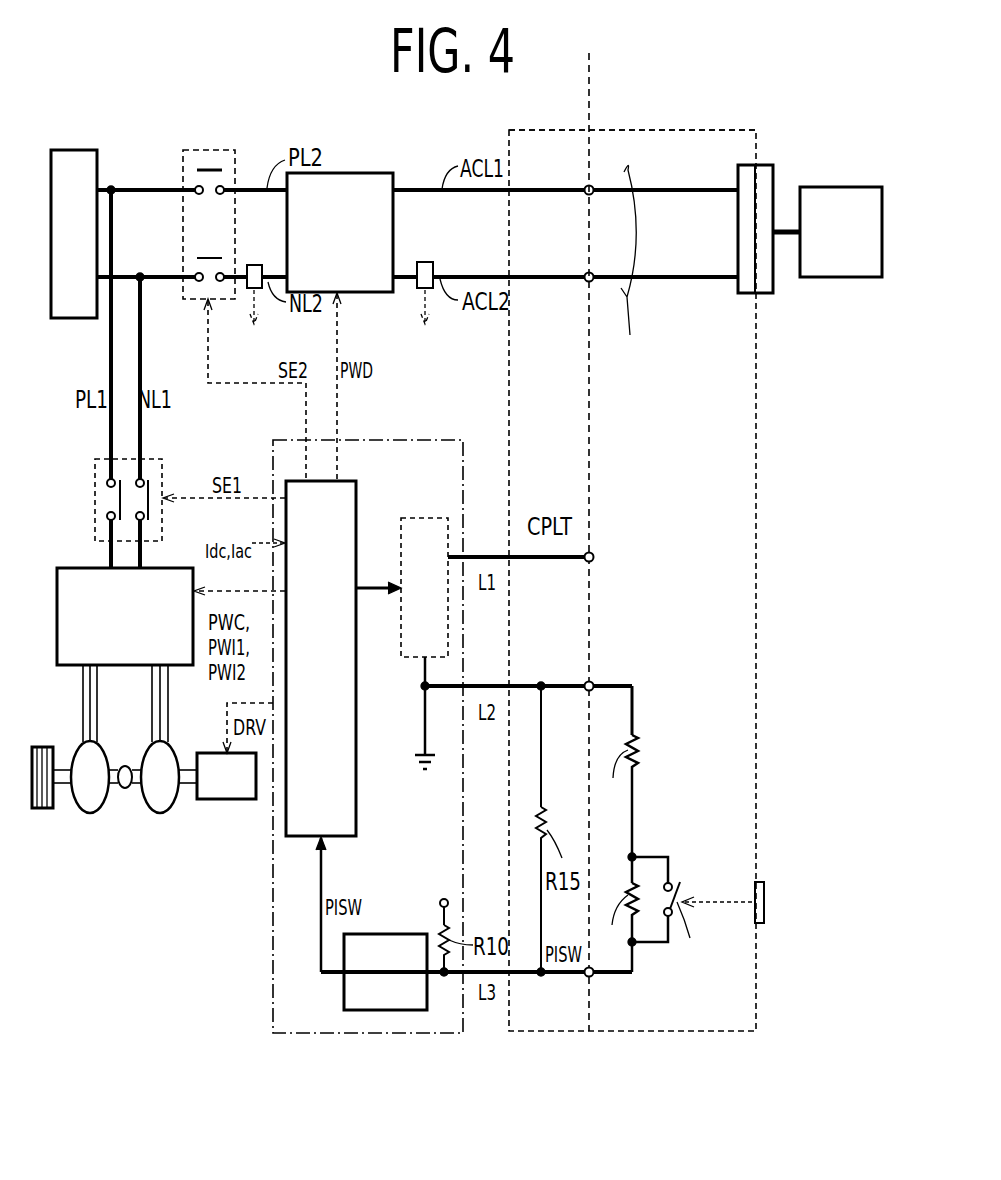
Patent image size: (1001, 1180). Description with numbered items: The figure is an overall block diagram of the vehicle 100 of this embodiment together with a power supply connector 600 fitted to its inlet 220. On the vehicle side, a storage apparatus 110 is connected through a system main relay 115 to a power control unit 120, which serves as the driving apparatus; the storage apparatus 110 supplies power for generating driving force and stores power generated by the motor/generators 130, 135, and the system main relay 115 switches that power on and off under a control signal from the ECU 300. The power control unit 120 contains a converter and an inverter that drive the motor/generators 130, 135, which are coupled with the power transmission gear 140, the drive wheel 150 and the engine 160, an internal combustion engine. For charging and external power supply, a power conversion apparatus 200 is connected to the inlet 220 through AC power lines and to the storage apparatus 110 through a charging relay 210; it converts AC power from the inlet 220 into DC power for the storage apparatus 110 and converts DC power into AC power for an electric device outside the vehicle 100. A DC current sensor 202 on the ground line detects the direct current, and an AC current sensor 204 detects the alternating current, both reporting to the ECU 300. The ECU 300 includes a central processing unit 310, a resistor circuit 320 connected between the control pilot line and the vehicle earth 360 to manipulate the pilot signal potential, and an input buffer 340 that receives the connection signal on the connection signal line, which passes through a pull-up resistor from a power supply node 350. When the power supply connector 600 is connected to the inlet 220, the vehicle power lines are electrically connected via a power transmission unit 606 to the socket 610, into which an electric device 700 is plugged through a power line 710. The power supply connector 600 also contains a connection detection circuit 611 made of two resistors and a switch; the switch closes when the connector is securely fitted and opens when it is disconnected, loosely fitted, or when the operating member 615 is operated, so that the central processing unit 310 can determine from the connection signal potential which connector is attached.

The vehicle 100 is at (72, 109).
The storage apparatus 110 is at (74, 150).
The system main relay 115 is at (104, 459).
The power control unit 120 is at (68, 568).
The motor/generator 130 is at (160, 813).
The motor/generator 135 is at (90, 813).
The power transmission gear 140 is at (125, 788).
The drive wheel 150 is at (44, 808).
The engine 160 is at (227, 799).
The power conversion apparatus 200 is at (339, 173).
The DC current sensor 202 is at (255, 265).
The AC current sensor 204 is at (426, 262).
The charging relay 210 is at (231, 150).
The inlet 220 is at (549, 130).
The ECU 300 is at (418, 440).
The central processing unit 310 is at (345, 481).
The resistor circuit 320 is at (427, 518).
The input buffer 340 is at (413, 934).
The power supply node 350 is at (444, 898).
The vehicle earth 360 is at (415, 750).
The power supply connector 600 is at (658, 130).
The power transmission unit 606 is at (628, 266).
The socket 610 is at (752, 293).
The connection detection circuit 611 is at (664, 787).
The operating member 615 is at (762, 882).
The electric device 700 is at (840, 187).
The power line to electric device 710 is at (762, 165).